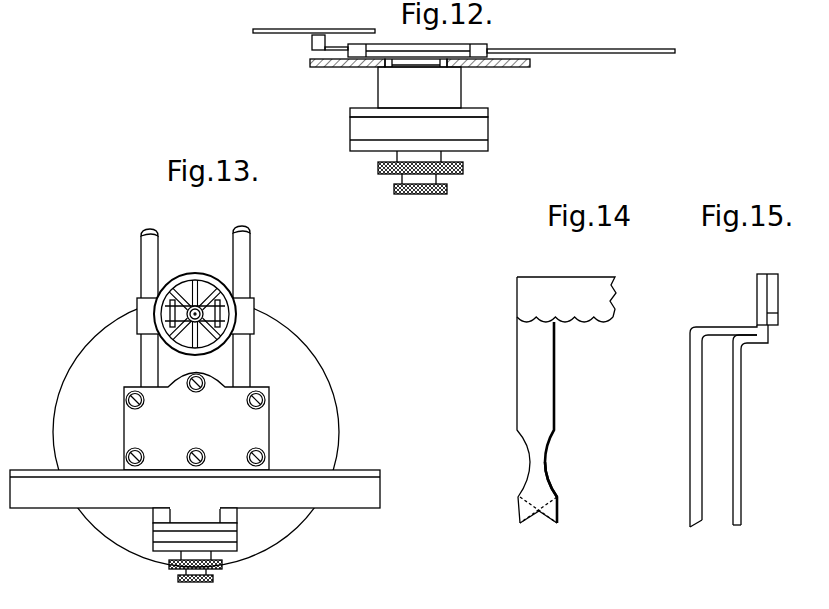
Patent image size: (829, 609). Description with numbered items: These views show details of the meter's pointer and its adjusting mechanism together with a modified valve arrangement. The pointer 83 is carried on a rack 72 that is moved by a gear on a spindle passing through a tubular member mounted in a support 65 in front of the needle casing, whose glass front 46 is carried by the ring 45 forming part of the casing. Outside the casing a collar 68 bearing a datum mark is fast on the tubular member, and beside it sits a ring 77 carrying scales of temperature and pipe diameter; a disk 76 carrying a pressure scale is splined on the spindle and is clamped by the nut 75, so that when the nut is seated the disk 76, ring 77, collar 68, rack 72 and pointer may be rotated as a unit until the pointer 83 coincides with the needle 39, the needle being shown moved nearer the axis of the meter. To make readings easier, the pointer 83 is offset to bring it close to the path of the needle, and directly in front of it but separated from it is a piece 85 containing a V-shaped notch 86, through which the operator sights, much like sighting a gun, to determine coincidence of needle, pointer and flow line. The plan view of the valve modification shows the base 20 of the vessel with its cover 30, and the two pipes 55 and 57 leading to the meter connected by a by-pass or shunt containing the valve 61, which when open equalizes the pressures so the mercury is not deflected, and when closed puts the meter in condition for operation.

In FIG. 13, the base of the vessel 20 is at (196, 432).
In FIG. 13, the cover 30 is at (196, 422).
In FIG. 12, the needle 39 is at (304, 29).
In FIG. 13, the ring 45 is at (368, 489).
In FIG. 12, the glass front 46 is at (517, 66).
In FIG. 13, the pipe 55 is at (148, 357).
In FIG. 13, the pipe 57 is at (243, 358).
In FIG. 13, the valve 61 is at (216, 304).
In FIG. 12, the support 65 is at (398, 88).
In FIG. 12, the collar 68 is at (494, 110).
In FIG. 14, the rack 72 is at (566, 299).
In FIG. 15, the rack 72 is at (774, 300).
In FIG. 12, the clamping nut 75 is at (448, 189).
In FIG. 12, the disk 76 is at (490, 143).
In FIG. 12, the ring 77 is at (492, 128).
In FIG. 12, the pointer 83 is at (312, 42).
In FIG. 14, the pointer 83 is at (544, 514).
In FIG. 15, the pointer 83 is at (696, 397).
In FIG. 14, the piece 85 is at (550, 508).
In FIG. 15, the piece 85 is at (742, 449).
In FIG. 14, the V-shaped notch 86 is at (532, 525).